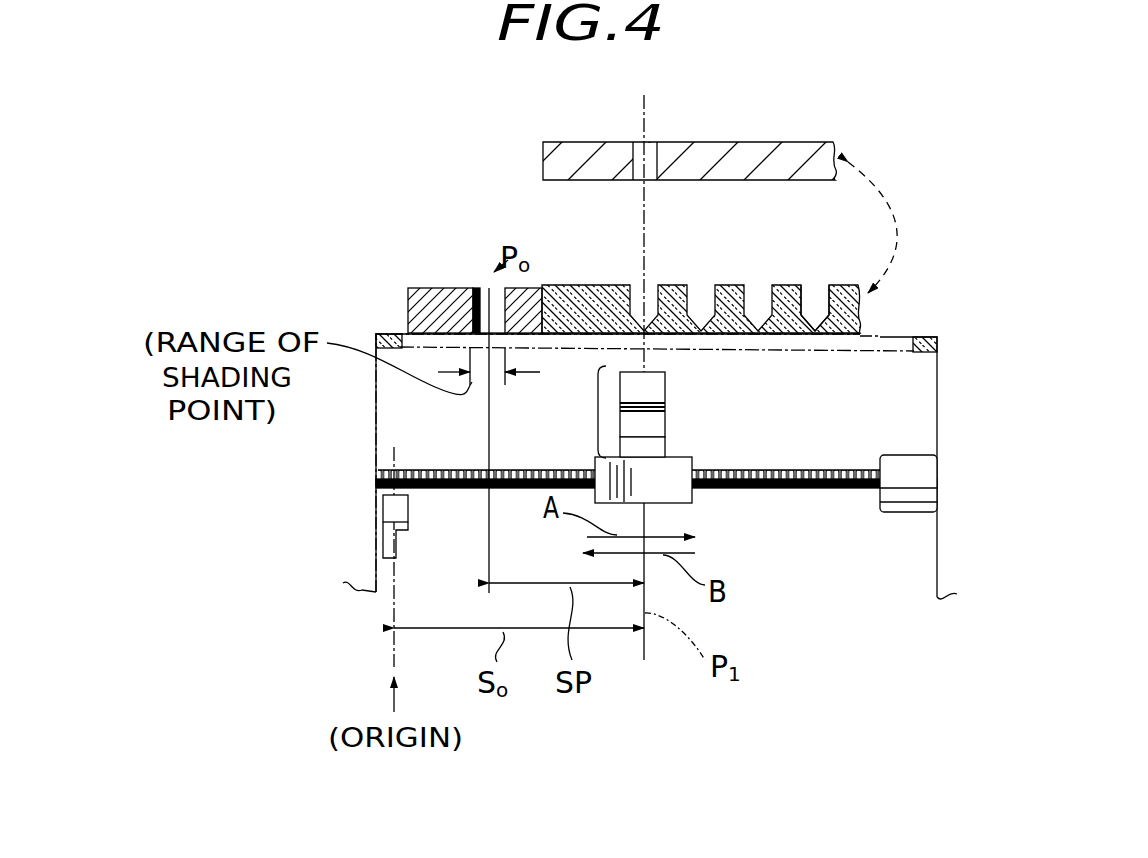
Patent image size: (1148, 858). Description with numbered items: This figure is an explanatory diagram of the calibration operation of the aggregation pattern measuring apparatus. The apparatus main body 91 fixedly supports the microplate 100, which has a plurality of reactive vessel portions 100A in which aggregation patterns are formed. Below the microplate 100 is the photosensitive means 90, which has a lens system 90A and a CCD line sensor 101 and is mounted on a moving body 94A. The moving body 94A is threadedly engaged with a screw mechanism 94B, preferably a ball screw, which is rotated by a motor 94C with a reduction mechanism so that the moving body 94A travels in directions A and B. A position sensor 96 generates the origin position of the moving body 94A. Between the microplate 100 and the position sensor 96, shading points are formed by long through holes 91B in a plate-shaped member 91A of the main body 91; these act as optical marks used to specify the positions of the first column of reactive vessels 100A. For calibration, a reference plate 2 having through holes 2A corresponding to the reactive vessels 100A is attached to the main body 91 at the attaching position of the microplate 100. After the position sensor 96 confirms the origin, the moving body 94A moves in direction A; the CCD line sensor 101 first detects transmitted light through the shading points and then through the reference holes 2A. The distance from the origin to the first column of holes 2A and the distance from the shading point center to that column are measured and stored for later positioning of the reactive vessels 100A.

The reference plate 2 is at (800, 140).
The through holes 2A is at (655, 143).
The apparatus main body 91 is at (345, 598).
The plate-shaped member 91A is at (423, 288).
The long through holes 91B is at (478, 288).
The position sensor 96 is at (407, 507).
The microplate 100 is at (578, 288).
The reactive vessel portions 100A is at (823, 300).
The photosensitive means 90 is at (597, 410).
The lens system 90A is at (658, 400).
The CCD line sensor 101 is at (658, 450).
The moving body 94A is at (687, 503).
The screw mechanism 94B is at (823, 493).
The motor 94C is at (893, 455).